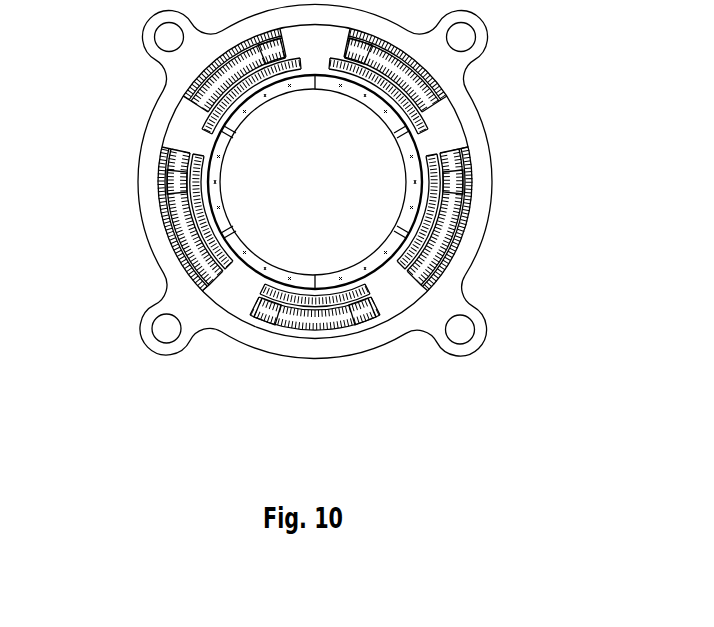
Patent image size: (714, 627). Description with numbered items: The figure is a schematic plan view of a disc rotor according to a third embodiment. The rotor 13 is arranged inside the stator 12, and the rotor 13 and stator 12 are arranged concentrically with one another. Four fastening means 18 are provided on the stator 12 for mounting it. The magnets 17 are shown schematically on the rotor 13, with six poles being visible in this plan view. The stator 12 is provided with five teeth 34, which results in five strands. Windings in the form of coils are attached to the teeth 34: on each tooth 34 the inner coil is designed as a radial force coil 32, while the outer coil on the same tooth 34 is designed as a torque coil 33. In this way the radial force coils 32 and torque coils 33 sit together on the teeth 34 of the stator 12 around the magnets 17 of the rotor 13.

The stator 12 is at (145, 148).
The rotor 13 is at (246, 268).
The magnets 17 is at (408, 148).
The fastening means 18 is at (148, 334).
The radial force coil 32 is at (360, 310).
The torque coil 33 is at (262, 324).
The teeth 34 is at (427, 215).